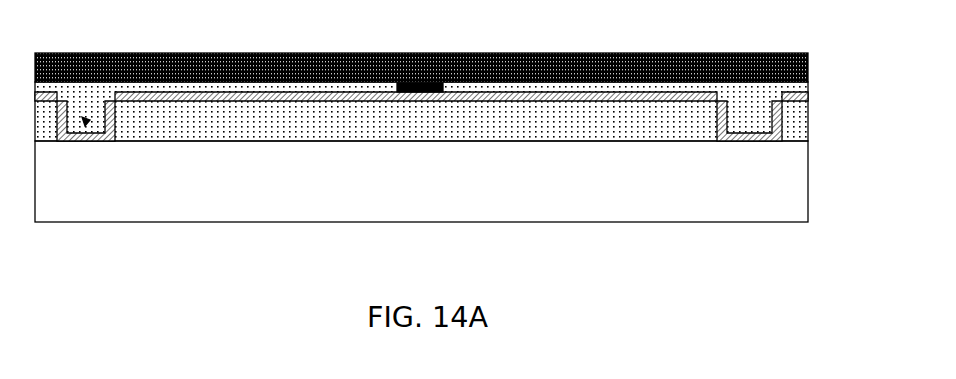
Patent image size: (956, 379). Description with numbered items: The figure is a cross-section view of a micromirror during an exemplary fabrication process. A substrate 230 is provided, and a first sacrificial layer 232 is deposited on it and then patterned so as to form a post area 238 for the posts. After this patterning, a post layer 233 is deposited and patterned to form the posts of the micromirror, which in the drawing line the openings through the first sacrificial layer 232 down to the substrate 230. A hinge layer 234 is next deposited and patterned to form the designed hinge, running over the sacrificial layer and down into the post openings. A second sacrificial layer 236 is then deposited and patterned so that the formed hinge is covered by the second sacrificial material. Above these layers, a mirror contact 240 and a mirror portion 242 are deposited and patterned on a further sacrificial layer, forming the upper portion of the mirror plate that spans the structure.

The substrate 230 is at (548, 207).
The first sacrificial layer 232 is at (533, 128).
The post layer 233 is at (722, 134).
The hinge layer 234 is at (240, 100).
The second sacrificial layer 236 is at (372, 95).
The post area 238 is at (86, 123).
The mirror contact 240 is at (440, 53).
The mirror portion 242 is at (312, 53).